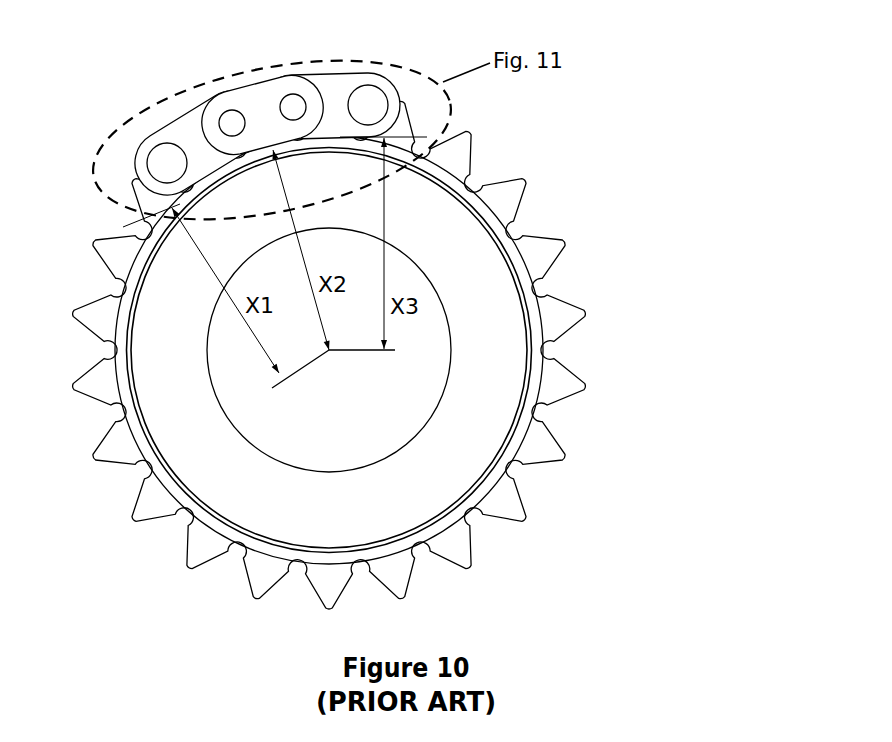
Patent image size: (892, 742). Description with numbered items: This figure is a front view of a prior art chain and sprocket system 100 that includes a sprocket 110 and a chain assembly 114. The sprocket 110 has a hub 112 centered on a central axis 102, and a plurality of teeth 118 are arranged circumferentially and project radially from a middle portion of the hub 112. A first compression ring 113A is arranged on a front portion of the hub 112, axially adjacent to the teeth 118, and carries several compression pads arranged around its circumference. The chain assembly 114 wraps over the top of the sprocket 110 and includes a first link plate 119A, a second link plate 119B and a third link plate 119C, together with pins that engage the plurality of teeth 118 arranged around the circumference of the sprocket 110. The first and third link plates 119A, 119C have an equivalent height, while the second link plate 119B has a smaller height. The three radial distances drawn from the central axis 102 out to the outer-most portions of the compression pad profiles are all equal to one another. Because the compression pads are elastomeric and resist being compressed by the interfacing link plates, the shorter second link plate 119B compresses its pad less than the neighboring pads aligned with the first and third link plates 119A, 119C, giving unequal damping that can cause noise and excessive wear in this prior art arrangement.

The chain and sprocket system 100 is at (405, 313).
The central axis 102 is at (368, 389).
The sprocket 110 is at (374, 350).
The hub 112 is at (518, 353).
The first compression ring 113A is at (502, 203).
The chain assembly 114 is at (216, 106).
The teeth 118 is at (583, 316).
The first link plate 119A is at (153, 141).
The second link plate 119B is at (275, 93).
The third link plate 119C is at (340, 90).